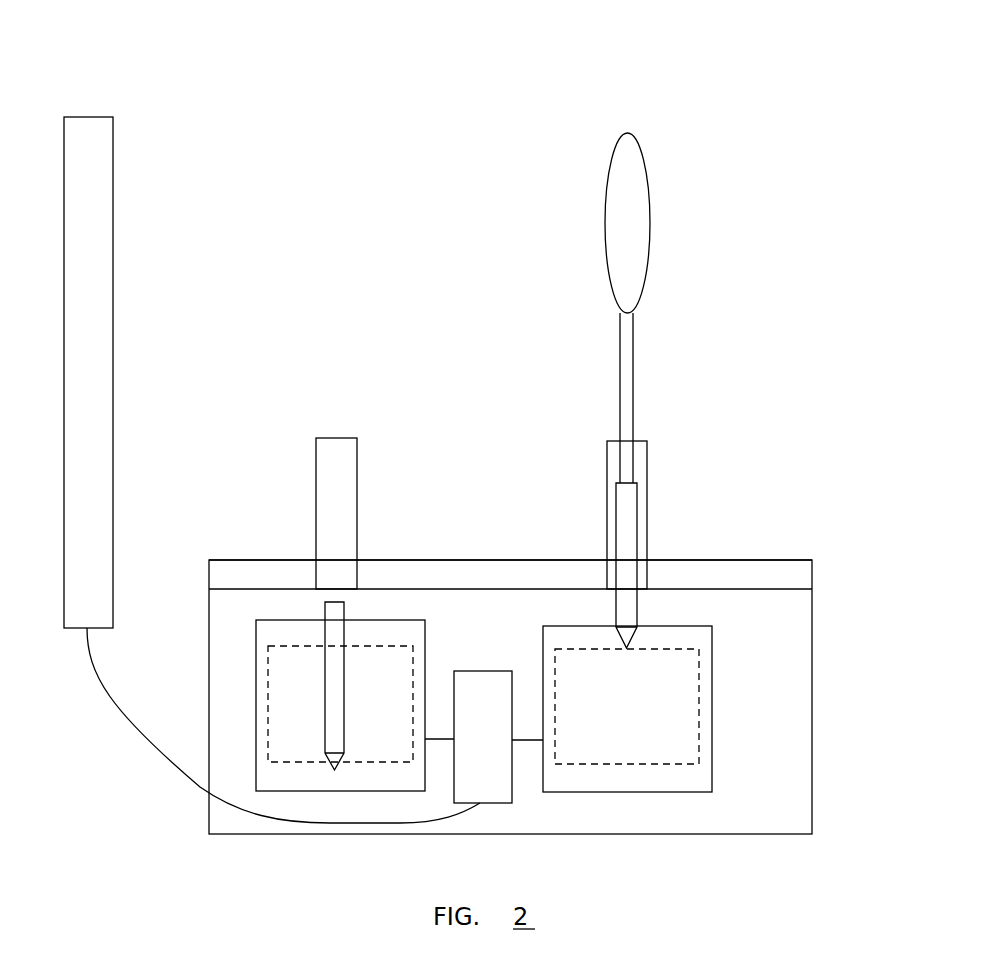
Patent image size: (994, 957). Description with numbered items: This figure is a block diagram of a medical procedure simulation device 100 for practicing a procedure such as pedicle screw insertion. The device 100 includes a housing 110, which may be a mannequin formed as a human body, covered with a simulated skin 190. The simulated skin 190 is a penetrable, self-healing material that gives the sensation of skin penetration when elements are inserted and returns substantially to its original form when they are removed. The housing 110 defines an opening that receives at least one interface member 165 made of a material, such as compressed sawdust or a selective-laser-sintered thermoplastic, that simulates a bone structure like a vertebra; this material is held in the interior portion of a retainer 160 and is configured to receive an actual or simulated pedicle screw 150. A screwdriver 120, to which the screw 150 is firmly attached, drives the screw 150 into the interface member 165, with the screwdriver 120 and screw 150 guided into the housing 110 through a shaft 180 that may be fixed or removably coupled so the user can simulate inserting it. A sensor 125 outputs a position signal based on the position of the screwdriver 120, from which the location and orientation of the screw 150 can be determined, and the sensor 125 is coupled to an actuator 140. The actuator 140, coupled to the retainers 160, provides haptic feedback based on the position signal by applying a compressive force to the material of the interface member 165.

The medical procedure simulation device 100 is at (305, 72).
The housing 110 is at (792, 633).
The screwdriver 120 is at (634, 192).
The sensor 125 is at (104, 298).
The actuator 140 is at (498, 790).
The pedicle screw 150 is at (337, 612).
The retainer 160 is at (403, 630).
The interface member 165 is at (388, 712).
The shaft 180 is at (327, 452).
The simulated skin 190 is at (788, 572).